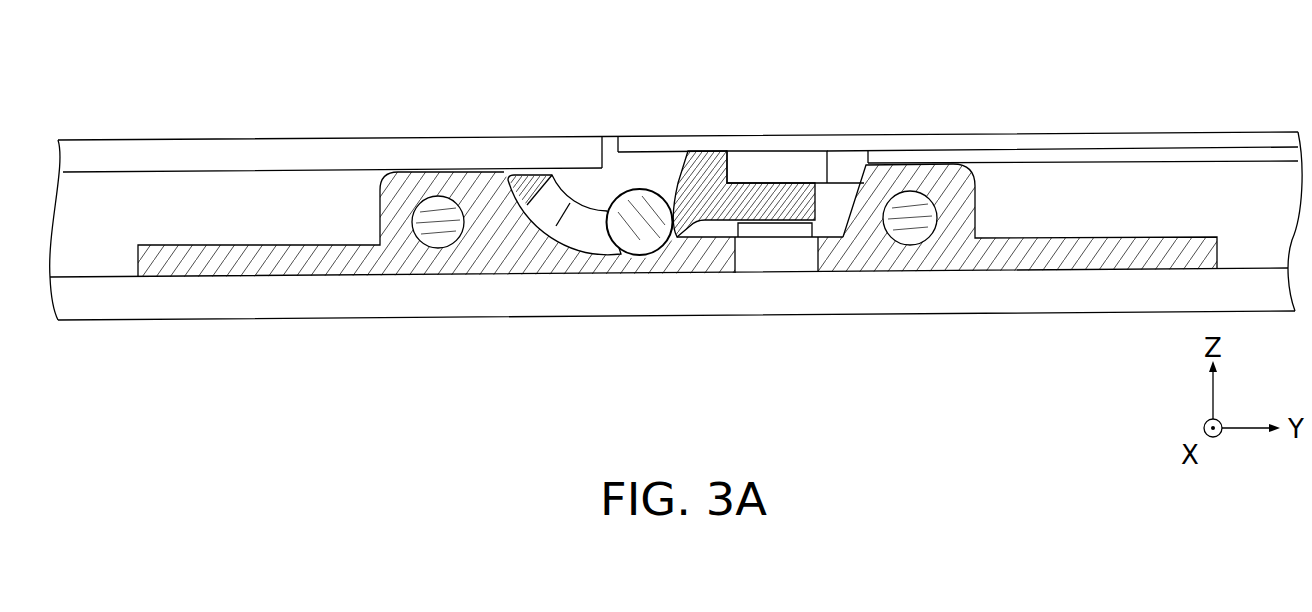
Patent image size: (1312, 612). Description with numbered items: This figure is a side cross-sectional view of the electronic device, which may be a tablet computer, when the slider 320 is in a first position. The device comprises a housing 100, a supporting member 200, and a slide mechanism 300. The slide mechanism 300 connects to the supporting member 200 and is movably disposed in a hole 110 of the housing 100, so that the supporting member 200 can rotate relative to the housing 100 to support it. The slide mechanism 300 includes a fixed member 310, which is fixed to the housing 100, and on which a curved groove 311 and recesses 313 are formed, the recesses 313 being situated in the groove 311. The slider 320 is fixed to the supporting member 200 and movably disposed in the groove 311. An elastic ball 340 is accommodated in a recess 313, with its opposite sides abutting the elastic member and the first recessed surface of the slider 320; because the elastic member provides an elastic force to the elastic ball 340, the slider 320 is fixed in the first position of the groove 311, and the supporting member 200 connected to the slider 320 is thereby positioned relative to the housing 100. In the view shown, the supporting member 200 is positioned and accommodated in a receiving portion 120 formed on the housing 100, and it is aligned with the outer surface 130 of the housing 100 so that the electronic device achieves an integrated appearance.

The housing 100 is at (133, 133).
The outer surface 130 is at (327, 140).
The supporting member 200 is at (955, 126).
The receiving portion 120 is at (603, 152).
The hole 110 is at (847, 163).
The slide mechanism 300 is at (677, 230).
The fixed member 310 is at (870, 253).
The curved groove 311 is at (508, 170).
The recess 313 is at (640, 188).
The slider 320 is at (713, 167).
The elastic ball 340 is at (622, 228).